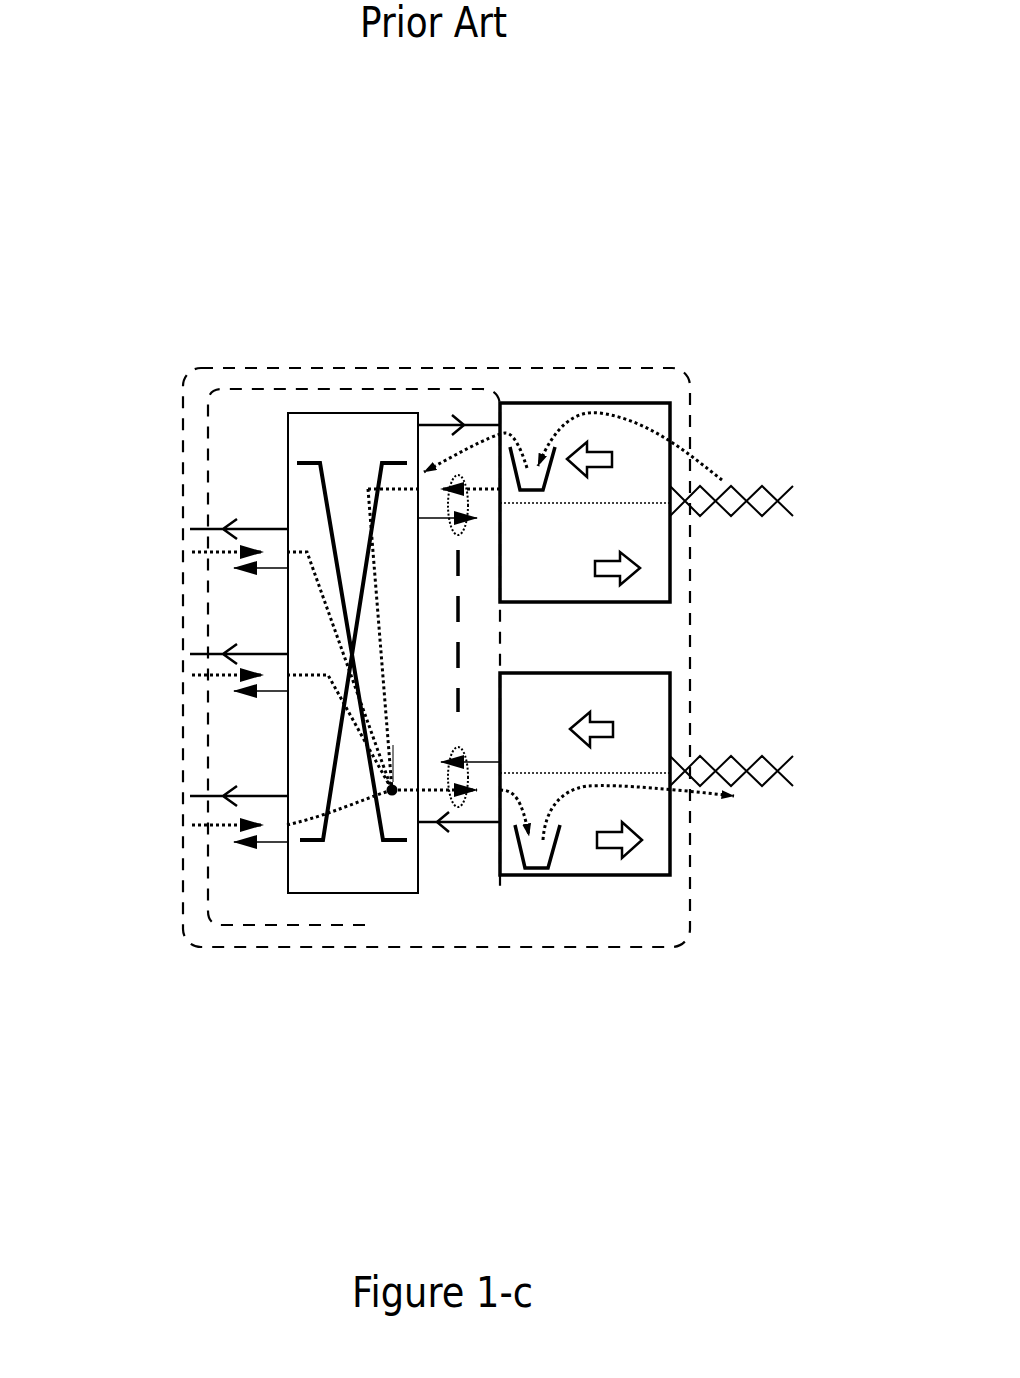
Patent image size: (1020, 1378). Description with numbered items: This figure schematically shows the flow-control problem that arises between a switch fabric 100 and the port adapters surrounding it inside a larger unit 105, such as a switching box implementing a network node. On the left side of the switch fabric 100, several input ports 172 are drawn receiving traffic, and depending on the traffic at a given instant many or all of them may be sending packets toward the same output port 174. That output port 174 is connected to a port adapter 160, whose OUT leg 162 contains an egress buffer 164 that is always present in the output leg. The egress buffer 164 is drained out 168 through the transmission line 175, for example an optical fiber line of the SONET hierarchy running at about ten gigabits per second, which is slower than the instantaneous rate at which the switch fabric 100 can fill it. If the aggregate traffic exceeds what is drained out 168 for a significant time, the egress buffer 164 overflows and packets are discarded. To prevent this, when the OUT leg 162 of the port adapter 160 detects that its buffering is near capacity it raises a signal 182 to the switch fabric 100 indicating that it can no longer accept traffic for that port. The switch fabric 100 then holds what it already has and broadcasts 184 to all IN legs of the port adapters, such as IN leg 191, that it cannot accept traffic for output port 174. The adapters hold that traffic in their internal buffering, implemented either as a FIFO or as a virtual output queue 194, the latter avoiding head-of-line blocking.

The switch fabric 100 is at (257, 388).
The larger unit 105 is at (448, 366).
The broadcast 184 is at (441, 424).
The input ports 172 is at (458, 496).
The output port 174 is at (437, 794).
The signal 182 is at (477, 825).
The IN leg of port adapter 191 is at (600, 442).
The virtual output queue 194 is at (548, 474).
The port adapter 160 is at (655, 670).
The transmission medium 175 is at (730, 752).
The draining out 168 is at (698, 803).
The egress buffer 164 is at (556, 858).
The OUT leg 162 is at (639, 846).